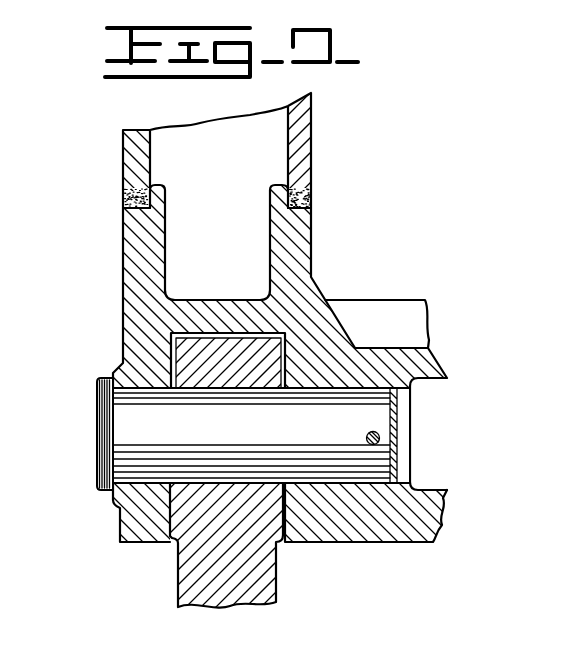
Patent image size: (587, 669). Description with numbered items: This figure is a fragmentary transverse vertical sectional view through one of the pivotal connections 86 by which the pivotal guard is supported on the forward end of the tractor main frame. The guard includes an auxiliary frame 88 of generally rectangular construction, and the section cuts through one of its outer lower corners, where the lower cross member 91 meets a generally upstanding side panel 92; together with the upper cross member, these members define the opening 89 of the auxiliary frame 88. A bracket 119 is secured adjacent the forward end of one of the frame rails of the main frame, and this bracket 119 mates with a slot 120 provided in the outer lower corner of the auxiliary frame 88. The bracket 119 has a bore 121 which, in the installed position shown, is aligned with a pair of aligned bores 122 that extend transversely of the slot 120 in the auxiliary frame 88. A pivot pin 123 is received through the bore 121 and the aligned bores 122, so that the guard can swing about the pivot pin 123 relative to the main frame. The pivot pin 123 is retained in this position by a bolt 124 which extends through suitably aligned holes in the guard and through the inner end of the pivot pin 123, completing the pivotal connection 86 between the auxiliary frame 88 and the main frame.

The pivot 86 is at (93, 395).
The auxiliary frame 88 is at (122, 258).
The opening 89 is at (309, 229).
The lower cross member 91 is at (347, 535).
The side panel 92 is at (306, 130).
The bracket 119 is at (190, 579).
The slot 120 is at (286, 362).
The bore 121 is at (233, 389).
The aligned bores 122 is at (312, 389).
The pivot pin 123 is at (122, 432).
The bolt 124 is at (367, 436).